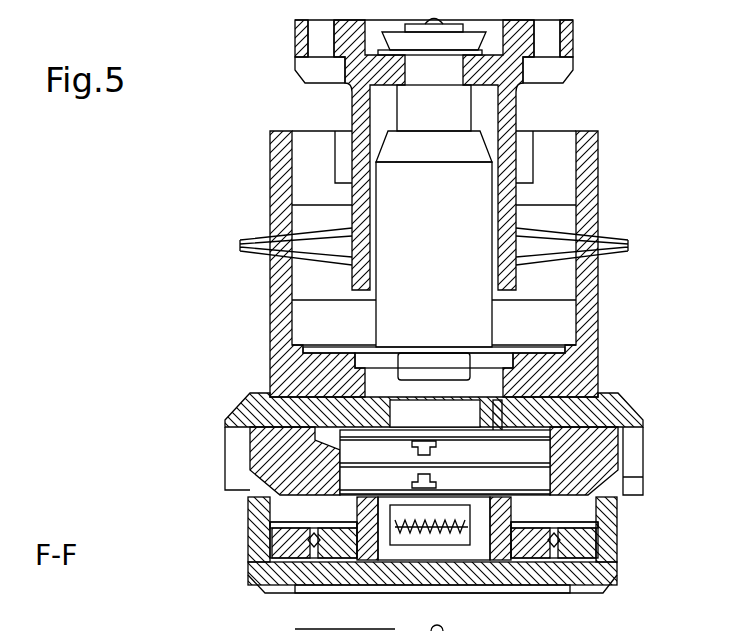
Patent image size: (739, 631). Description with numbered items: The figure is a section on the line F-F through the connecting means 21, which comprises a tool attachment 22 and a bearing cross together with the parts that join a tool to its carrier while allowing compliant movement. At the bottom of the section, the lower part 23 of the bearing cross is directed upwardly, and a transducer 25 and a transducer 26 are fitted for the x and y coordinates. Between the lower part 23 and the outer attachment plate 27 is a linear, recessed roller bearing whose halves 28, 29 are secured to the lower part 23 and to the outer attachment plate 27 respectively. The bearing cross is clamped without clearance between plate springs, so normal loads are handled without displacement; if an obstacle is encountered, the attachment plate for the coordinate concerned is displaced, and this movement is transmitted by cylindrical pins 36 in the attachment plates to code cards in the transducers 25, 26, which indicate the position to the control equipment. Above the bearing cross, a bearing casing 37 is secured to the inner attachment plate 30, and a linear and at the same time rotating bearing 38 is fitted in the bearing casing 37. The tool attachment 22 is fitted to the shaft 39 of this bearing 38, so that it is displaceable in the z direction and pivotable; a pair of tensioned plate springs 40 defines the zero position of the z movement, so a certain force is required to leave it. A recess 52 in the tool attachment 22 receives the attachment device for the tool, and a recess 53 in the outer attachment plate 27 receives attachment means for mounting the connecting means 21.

The connecting means 21 is at (667, 211).
The tool attachment 22 is at (566, 56).
The lower part of the bearing cross 23 is at (285, 495).
The transducer 25 is at (367, 560).
The transducer 26 is at (362, 447).
The outer attachment plate 27 is at (280, 572).
The roller bearing half 28 is at (270, 526).
The roller bearing half 29 is at (300, 545).
The inner attachment plate 30 is at (608, 405).
The cylindrical pin 36 is at (490, 444).
The bearing casing 37 is at (275, 168).
The linear and rotating bearing 38 is at (397, 319).
The shaft 39 is at (445, 22).
The plate springs 40 is at (240, 244).
The recess 52 is at (320, 43).
The recess 53 is at (547, 593).